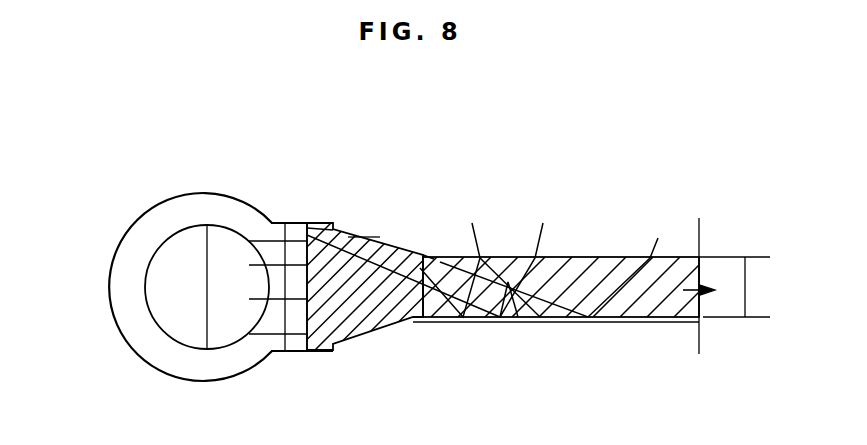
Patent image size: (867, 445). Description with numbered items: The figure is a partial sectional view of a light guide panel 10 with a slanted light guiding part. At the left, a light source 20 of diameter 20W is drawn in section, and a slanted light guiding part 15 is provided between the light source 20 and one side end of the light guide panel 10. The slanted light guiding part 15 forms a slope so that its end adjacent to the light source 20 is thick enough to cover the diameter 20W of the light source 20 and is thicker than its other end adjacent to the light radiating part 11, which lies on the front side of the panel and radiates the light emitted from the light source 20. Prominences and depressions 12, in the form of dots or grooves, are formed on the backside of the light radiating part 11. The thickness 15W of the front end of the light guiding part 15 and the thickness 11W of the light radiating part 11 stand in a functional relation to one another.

The light guide panel 10 is at (718, 260).
The light radiating part 11 is at (640, 268).
The thickness of the light radiating part 11W is at (746, 292).
The prominences and depressions 12 is at (626, 322).
The slanted light guiding part 15 is at (415, 245).
The thickness of the front end of the light guiding part 15W is at (283, 321).
The light source 20 is at (180, 327).
The diameter of the light source 20W is at (205, 286).